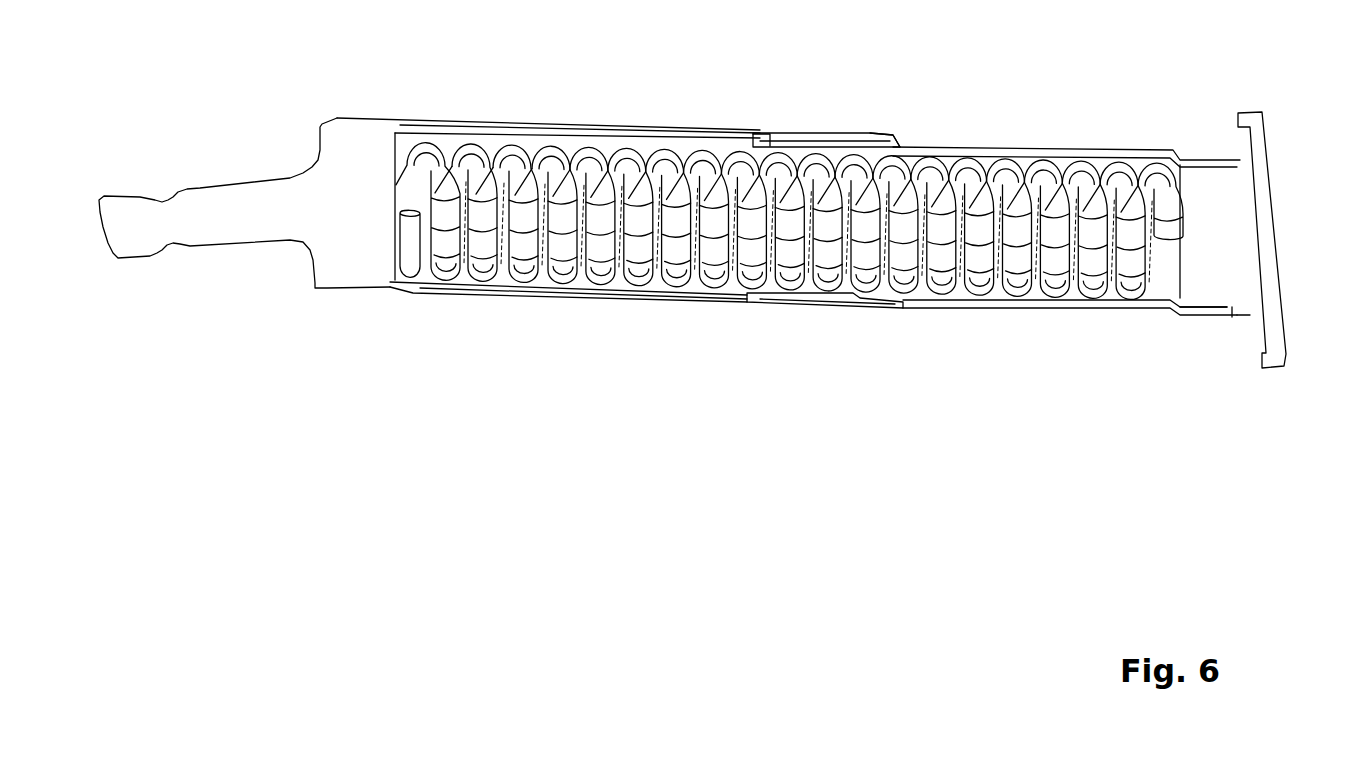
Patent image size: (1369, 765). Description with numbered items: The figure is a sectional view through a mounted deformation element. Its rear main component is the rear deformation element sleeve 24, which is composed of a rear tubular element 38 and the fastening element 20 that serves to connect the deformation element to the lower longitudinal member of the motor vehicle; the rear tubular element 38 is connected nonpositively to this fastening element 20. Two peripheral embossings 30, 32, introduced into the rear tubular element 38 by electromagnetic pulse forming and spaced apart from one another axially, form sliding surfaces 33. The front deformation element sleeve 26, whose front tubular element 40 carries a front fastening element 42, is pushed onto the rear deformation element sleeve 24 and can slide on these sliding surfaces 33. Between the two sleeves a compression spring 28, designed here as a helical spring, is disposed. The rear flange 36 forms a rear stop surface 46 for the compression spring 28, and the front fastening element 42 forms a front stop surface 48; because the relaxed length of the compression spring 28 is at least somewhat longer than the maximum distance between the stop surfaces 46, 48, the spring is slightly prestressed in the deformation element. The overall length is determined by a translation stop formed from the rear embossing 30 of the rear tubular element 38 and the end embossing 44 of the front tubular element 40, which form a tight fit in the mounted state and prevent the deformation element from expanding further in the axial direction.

The fastening element 20 is at (1258, 203).
The rear deformation element sleeve 24 is at (1071, 220).
The front deformation element sleeve 26 is at (548, 182).
The compression spring 28 is at (672, 277).
The rear embossing 30 is at (843, 115).
The embossing 32 is at (762, 143).
The sliding surfaces 33 is at (752, 300).
The rear flange 36 is at (1240, 278).
The rear tubular element 38 is at (1070, 303).
The front tubular element 40 is at (560, 295).
The front fastening element 42 is at (205, 236).
The end embossing 44 is at (900, 140).
The rear stop surface 46 is at (1172, 281).
The front stop surface 48 is at (397, 147).